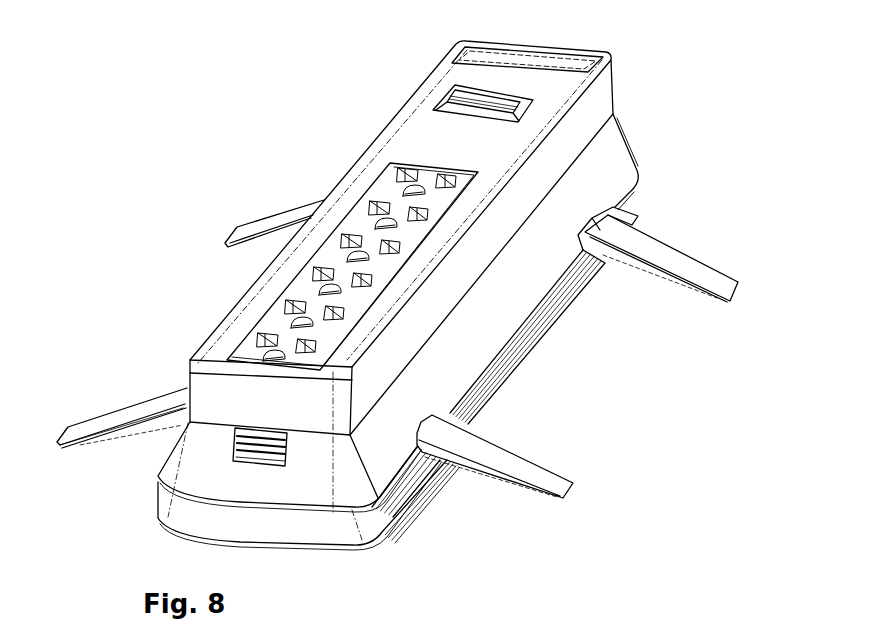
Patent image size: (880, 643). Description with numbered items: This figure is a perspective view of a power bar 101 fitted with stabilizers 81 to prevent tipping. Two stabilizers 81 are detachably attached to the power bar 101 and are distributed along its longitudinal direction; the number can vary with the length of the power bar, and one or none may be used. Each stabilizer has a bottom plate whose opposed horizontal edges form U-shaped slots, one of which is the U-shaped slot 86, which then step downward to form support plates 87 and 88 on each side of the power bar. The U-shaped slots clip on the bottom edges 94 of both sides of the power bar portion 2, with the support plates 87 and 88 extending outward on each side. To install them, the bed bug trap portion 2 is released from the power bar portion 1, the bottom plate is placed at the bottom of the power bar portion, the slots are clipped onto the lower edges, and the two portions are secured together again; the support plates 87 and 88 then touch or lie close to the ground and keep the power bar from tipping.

The power bar portion 1 is at (443, 276).
The bed bug trap portion 2 is at (390, 365).
The stabilizers 81 is at (290, 218).
The U-shaped slot 86 is at (424, 453).
The support plate 87 is at (92, 437).
The support plate 88 is at (507, 467).
The bottom edges 94 is at (497, 347).
The power bar 101 is at (405, 130).